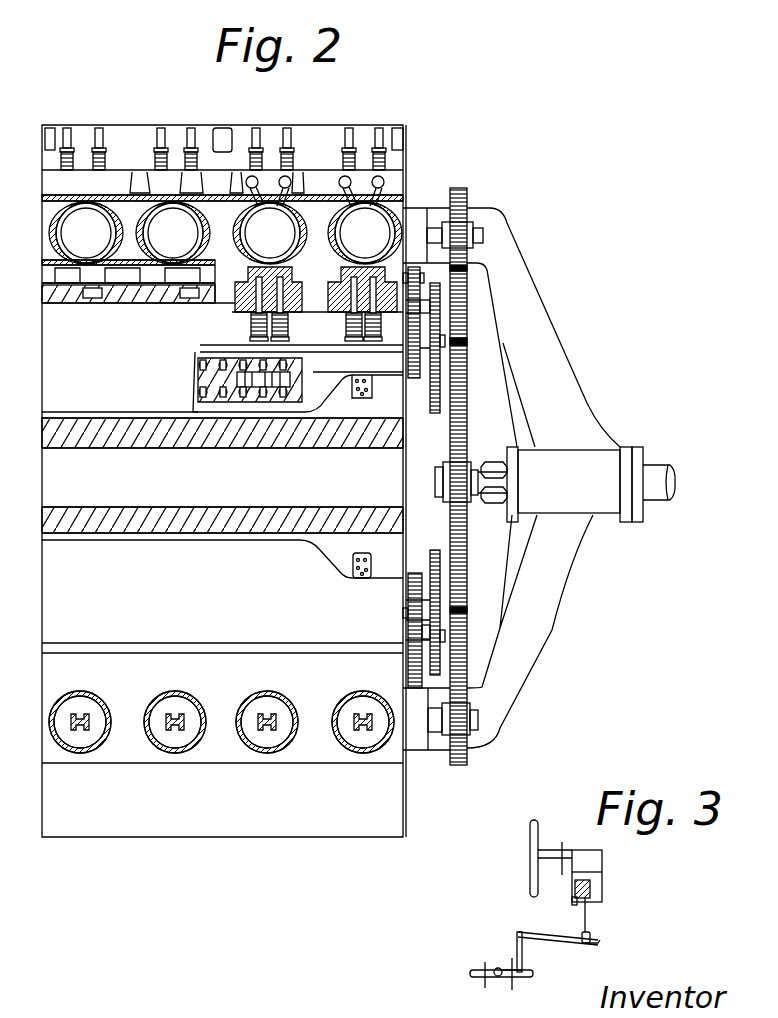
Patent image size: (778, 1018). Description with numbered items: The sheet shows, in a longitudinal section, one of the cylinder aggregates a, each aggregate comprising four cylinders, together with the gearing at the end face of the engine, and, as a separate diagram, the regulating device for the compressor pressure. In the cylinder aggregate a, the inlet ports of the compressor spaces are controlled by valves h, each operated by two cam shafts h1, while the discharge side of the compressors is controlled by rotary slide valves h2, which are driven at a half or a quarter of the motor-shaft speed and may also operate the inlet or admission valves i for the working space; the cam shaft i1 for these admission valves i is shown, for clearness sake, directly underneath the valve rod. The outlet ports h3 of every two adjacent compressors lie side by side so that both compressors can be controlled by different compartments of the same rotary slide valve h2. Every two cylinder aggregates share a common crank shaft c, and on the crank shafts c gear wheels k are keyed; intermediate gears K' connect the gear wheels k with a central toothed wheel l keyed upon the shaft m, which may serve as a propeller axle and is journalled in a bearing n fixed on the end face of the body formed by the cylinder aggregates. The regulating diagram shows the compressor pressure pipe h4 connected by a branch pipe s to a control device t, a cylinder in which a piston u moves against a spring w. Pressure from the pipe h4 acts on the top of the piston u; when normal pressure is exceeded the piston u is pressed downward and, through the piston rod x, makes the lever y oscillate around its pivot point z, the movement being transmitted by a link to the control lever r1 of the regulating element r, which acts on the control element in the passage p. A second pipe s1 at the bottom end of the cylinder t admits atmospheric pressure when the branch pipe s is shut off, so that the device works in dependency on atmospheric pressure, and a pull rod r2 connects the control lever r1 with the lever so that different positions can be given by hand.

In FIG. 2, the cam shaft h1 is at (105, 140).
In FIG. 2, the valve h is at (102, 163).
In FIG. 2, the outlet port h3 is at (225, 234).
In FIG. 2, the rotary slide valve h2 is at (163, 278).
In FIG. 2, the compressor pressure pipe h4 is at (190, 298).
In FIG. 3, the compressor pressure pipe h4 is at (530, 847).
In FIG. 2, the valve fittings j is at (297, 190).
In FIG. 2, the cylinder aggregate a is at (297, 262).
In FIG. 2, the admission valve i is at (297, 292).
In FIG. 2, the cam shaft i1 is at (303, 345).
In FIG. 2, the gear wheel k is at (462, 190).
In FIG. 2, the gear K' is at (509, 303).
In FIG. 2, the central toothed wheel l is at (460, 447).
In FIG. 2, the crank shaft c is at (480, 235).
In FIG. 2, the bearing n is at (577, 493).
In FIG. 2, the shaft m is at (657, 493).
In FIG. 3, the branch pipe s is at (543, 858).
In FIG. 3, the second pipe s1 is at (572, 902).
In FIG. 3, the piston u is at (590, 877).
In FIG. 3, the control device t is at (593, 888).
In FIG. 3, the spring w is at (590, 897).
In FIG. 3, the piston rod x is at (582, 923).
In FIG. 3, the pivot point z is at (545, 937).
In FIG. 3, the lever y is at (572, 942).
In FIG. 3, the pull rod r2 is at (515, 950).
In FIG. 3, the passage p is at (478, 978).
In FIG. 3, the regulating element r is at (498, 976).
In FIG. 3, the control lever r1 is at (517, 976).